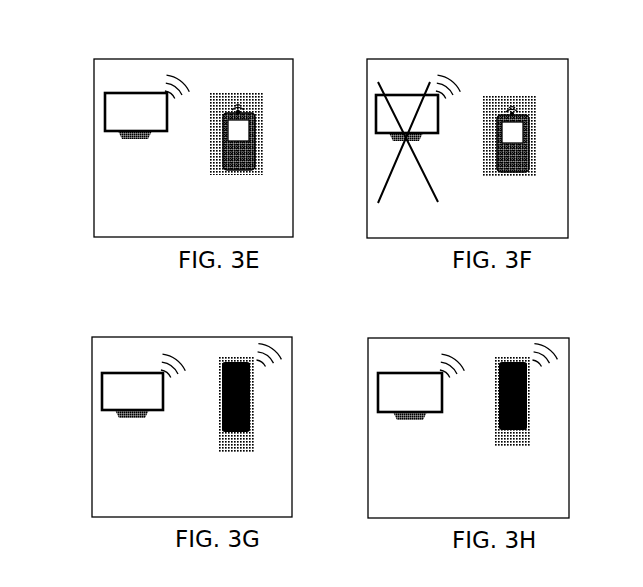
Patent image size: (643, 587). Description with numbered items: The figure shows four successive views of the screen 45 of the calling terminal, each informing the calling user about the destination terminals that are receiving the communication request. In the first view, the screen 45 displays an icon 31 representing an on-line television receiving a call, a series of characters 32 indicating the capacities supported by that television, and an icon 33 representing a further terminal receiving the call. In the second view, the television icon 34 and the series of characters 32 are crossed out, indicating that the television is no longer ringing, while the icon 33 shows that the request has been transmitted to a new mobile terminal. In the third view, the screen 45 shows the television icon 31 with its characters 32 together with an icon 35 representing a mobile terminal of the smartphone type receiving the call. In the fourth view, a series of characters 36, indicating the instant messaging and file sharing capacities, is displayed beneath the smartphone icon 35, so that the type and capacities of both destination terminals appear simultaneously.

In FIG. 3E, the icon representing an on-line television receiving a call 31 is at (122, 93).
In FIG. 3G, the icon representing an on-line television receiving a call 31 is at (125, 373).
In FIG. 3H, the icon representing an on-line television receiving a call 31 is at (410, 373).
In FIG. 3E, the series of characters indicating the capacities supported by the television termi 32 is at (113, 172).
In FIG. 3F, the series of characters indicating the capacities supported by the television termi 32 is at (410, 182).
In FIG. 3G, the series of characters indicating the capacities supported by the television termi 32 is at (117, 453).
In FIG. 3H, the series of characters indicating the capacities supported by the television termi 32 is at (402, 455).
In FIG. 3E, the icon representing a terminal receiving a call 33 is at (263, 105).
In FIG. 3F, the icon representing a terminal receiving a call 33 is at (530, 125).
In FIG. 3F, the icon representing the television terminal 34 is at (408, 87).
In FIG. 3G, the icon representing a mobile terminal receiving a call 35 is at (255, 407).
In FIG. 3H, the icon representing a mobile terminal receiving a call 35 is at (531, 407).
In FIG. 3H, the series of characters indicating the functionalities supported by the mobile term 36 is at (527, 487).
In FIG. 3E, the screen 45 is at (247, 57).
In FIG. 3F, the screen 45 is at (517, 57).
In FIG. 3G, the screen 45 is at (242, 337).
In FIG. 3H, the screen 45 is at (520, 338).